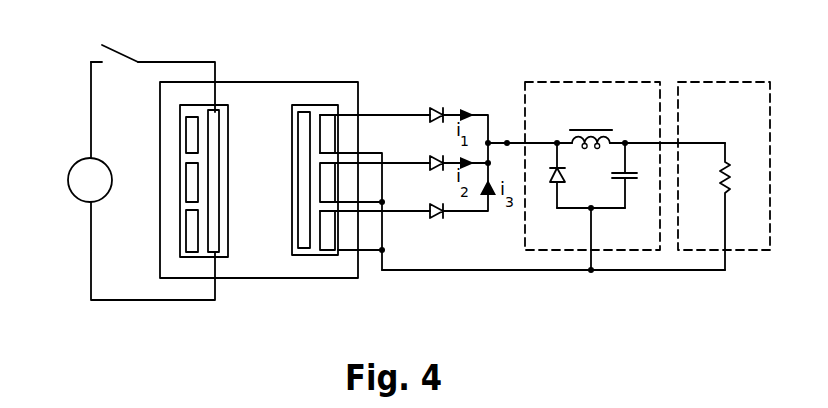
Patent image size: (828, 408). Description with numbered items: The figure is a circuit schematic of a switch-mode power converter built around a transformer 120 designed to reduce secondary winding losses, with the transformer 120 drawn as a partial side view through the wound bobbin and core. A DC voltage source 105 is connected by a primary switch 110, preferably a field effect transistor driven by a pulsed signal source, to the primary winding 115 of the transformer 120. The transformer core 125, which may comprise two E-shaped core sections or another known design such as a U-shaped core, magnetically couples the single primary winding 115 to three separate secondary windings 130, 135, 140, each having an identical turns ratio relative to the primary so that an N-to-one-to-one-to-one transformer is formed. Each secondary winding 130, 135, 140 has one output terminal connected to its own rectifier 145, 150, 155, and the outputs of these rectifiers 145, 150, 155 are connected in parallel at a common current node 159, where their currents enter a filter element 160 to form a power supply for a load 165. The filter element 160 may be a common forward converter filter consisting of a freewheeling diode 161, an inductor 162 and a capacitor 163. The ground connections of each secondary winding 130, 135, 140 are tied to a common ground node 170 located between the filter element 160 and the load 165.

The DC voltage source 105 is at (72, 194).
The primary switch 110 is at (118, 58).
The primary winding 115 is at (302, 238).
The transformer 120 is at (247, 72).
The transformer core 125 is at (323, 85).
The secondary winding 130 is at (193, 240).
The secondary winding 135 is at (192, 195).
The secondary winding 140 is at (190, 133).
The rectifier 145 is at (442, 217).
The rectifier 150 is at (442, 172).
The rectifier 155 is at (442, 112).
The node 159 is at (507, 140).
The filter element 160 is at (577, 82).
The freewheeling diode 161 is at (555, 180).
The inductor 162 is at (607, 127).
The capacitor 163 is at (630, 185).
The load 165 is at (718, 82).
The common ground node 170 is at (623, 275).